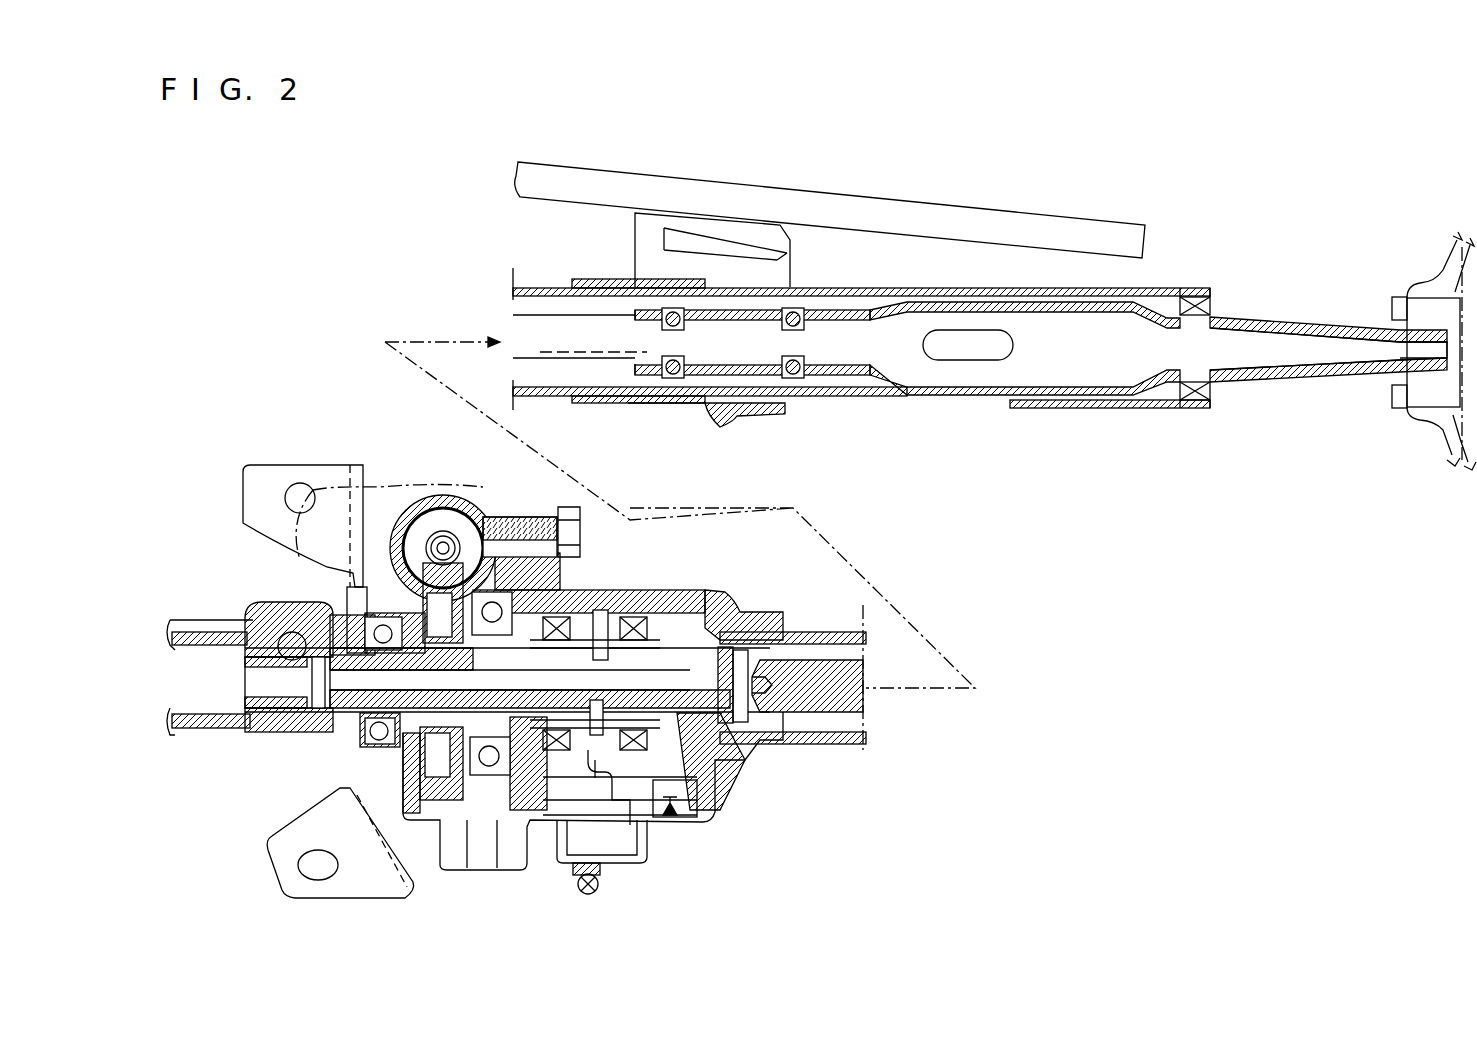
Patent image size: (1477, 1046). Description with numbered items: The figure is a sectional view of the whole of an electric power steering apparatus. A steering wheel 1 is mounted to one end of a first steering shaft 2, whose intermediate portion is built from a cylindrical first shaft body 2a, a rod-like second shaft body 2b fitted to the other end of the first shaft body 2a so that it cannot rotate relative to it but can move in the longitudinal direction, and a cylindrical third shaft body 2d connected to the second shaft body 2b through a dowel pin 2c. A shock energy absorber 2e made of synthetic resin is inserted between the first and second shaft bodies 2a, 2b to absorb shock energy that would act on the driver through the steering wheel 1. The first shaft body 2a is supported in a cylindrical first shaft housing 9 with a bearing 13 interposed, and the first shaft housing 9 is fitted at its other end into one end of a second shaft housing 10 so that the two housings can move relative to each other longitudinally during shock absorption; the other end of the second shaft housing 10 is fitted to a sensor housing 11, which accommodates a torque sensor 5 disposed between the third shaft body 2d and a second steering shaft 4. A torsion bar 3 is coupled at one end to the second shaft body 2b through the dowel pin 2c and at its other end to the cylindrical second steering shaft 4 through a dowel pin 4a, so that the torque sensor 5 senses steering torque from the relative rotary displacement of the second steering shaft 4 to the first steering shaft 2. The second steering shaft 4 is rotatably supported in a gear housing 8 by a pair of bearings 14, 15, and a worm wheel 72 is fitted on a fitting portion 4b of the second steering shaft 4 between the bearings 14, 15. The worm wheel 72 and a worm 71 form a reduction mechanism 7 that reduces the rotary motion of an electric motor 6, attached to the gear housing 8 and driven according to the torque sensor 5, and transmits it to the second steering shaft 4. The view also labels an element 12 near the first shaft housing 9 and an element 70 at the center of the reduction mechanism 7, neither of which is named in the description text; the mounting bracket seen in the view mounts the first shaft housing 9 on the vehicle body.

The steering wheel 1 is at (1433, 450).
The first steering shaft 2 is at (1300, 383).
The first shaft body 2a is at (1246, 313).
The second shaft body 2b is at (545, 323).
The dowel pin 2c is at (740, 653).
The third shaft body 2d is at (680, 630).
The shock energy absorber 2e is at (795, 378).
The torsion bar 3 is at (693, 680).
The second steering shaft 4 is at (340, 733).
The dowel pin 4a is at (305, 700).
The fitting portion 4b is at (370, 640).
The torque sensor 5 is at (584, 812).
The electric motor 6 is at (382, 486).
The reduction mechanism 7 is at (419, 536).
The gear housing 8 is at (385, 532).
The first shaft housing 9 is at (1150, 408).
The second shaft housing 10 is at (828, 745).
The sensor housing 11 is at (713, 808).
The tilt block 12 is at (667, 238).
The bearing 13 is at (1193, 288).
The bearing 14 is at (490, 760).
The bearing 15 is at (380, 773).
The worm shaft hub 70 is at (443, 524).
The worm 71 is at (463, 537).
The worm wheel 72 is at (430, 600).